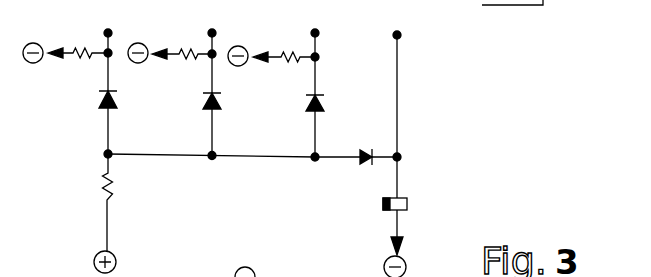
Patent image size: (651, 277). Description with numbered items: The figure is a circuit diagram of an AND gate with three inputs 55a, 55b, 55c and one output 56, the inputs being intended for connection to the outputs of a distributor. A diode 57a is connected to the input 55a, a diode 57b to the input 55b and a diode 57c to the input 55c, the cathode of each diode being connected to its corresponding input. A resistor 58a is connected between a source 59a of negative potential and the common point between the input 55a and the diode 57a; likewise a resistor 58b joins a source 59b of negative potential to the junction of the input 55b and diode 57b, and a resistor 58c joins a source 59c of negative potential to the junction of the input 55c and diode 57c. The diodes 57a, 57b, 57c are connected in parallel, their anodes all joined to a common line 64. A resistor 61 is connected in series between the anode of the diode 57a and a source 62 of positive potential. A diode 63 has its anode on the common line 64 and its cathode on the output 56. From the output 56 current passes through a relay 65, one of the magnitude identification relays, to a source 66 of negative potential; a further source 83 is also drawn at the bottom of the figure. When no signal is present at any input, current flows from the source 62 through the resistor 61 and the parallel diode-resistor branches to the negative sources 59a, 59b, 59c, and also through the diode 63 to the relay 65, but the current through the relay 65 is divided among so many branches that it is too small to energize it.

The input 55a is at (112, 31).
The input 55b is at (216, 31).
The input 55c is at (319, 31).
The output 56 is at (402, 159).
The diode 57a is at (99, 100).
The diode 57b is at (203, 101).
The diode 57c is at (306, 101).
The resistor 58a is at (82, 48).
The resistor 58b is at (187, 49).
The resistor 58c is at (291, 50).
The source of negative potential 59a is at (40, 61).
The source of negative potential 59b is at (145, 61).
The source of negative potential 59c is at (245, 64).
The resistor 61 is at (101, 184).
The source of positive potential 62 is at (114, 256).
The diode 63 is at (366, 161).
The common line 64 is at (266, 160).
The relay 65 is at (408, 206).
The source of negative potential 66 is at (405, 264).
The voltage source 83 is at (250, 273).